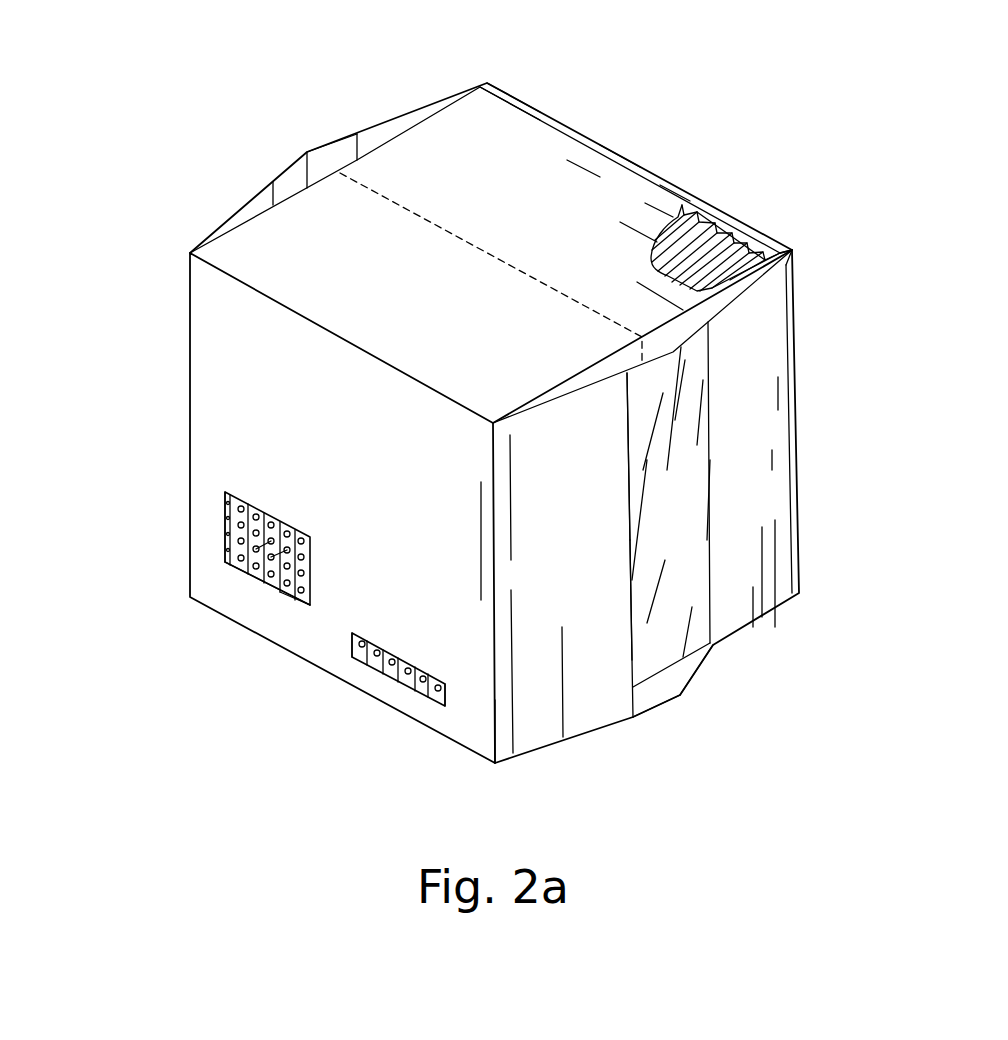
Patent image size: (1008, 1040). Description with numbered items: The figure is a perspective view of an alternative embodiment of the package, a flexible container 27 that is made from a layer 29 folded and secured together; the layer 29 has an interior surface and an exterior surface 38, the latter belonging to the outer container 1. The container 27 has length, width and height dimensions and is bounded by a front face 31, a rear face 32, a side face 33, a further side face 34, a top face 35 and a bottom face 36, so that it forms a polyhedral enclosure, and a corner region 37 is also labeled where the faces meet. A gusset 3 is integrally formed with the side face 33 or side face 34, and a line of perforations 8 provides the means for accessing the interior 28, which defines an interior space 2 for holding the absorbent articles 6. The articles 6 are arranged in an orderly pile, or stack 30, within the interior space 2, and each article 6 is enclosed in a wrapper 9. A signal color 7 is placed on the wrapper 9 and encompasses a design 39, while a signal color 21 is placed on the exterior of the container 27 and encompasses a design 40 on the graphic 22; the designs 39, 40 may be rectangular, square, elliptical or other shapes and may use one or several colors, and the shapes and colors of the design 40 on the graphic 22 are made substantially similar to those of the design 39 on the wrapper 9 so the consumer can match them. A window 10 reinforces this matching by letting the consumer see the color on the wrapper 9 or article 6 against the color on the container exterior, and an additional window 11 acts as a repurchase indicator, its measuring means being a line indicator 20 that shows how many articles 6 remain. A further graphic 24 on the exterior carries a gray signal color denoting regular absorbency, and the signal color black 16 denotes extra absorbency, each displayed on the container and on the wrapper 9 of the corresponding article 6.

The flexible container 27 is at (655, 90).
The outer container 1 is at (680, 187).
The interior space 2 is at (723, 223).
The gusset 3 is at (322, 137).
The absorbent articles 6 is at (240, 556).
The signal color 7 is at (306, 555).
The line of perforations 8 is at (403, 205).
The wrapper 9 is at (280, 590).
The window 10 is at (237, 566).
The window 11 is at (629, 625).
The signal color black 16 is at (629, 620).
The line indicator 20 is at (702, 650).
The signal color 21 is at (410, 677).
The graphic 22 is at (365, 658).
The graphic 24 is at (629, 540).
The interior 28 is at (735, 222).
The layer 29 is at (520, 100).
The stack 30 is at (223, 500).
The front face 31 is at (212, 372).
The rear face 32 is at (630, 160).
The side face 33 is at (762, 433).
The side face 34 is at (260, 205).
The top face 35 is at (283, 286).
The bottom face 36 is at (472, 772).
The rear corner 37 is at (780, 242).
The exterior surface 38 is at (532, 135).
The design 39 is at (242, 560).
The design 40 is at (368, 682).